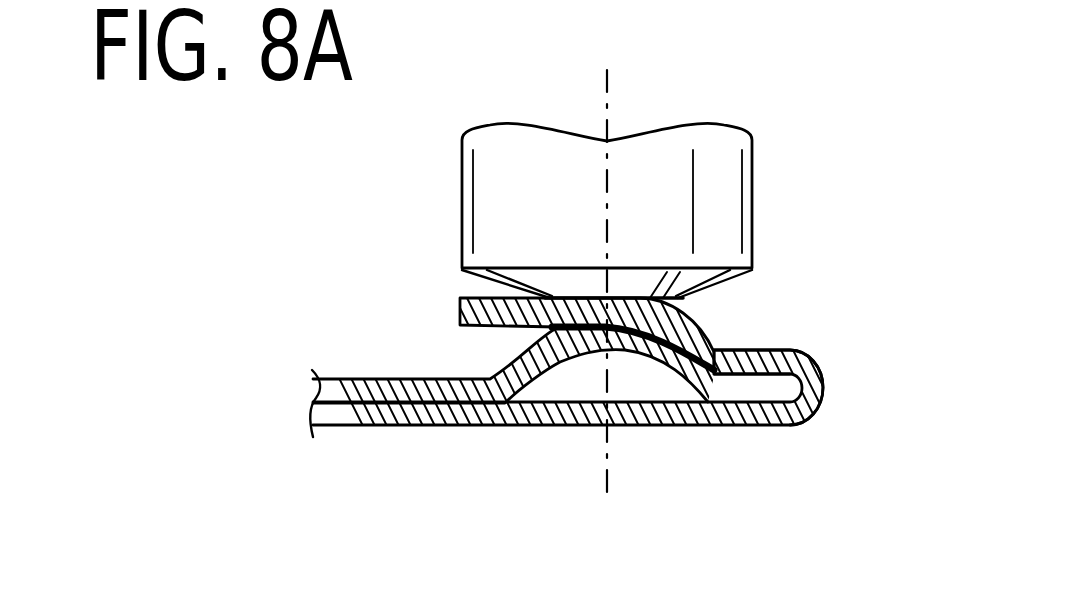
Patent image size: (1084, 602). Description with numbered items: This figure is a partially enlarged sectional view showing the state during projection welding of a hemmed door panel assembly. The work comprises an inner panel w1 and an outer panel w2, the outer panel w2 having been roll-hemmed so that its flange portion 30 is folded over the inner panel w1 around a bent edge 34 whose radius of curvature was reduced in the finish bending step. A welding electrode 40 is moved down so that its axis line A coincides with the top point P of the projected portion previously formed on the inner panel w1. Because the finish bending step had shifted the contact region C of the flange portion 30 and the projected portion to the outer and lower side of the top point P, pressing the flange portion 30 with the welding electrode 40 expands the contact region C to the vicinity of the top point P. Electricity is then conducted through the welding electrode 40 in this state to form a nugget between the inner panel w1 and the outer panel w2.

The welding electrode 40 is at (479, 205).
The flange portion 30 is at (460, 300).
The bent edge 34 is at (828, 376).
The inner panel w1 is at (392, 378).
The outer panel w2 is at (383, 427).
The contact region C is at (630, 298).
The top point P is at (600, 352).
The axis line A is at (610, 255).